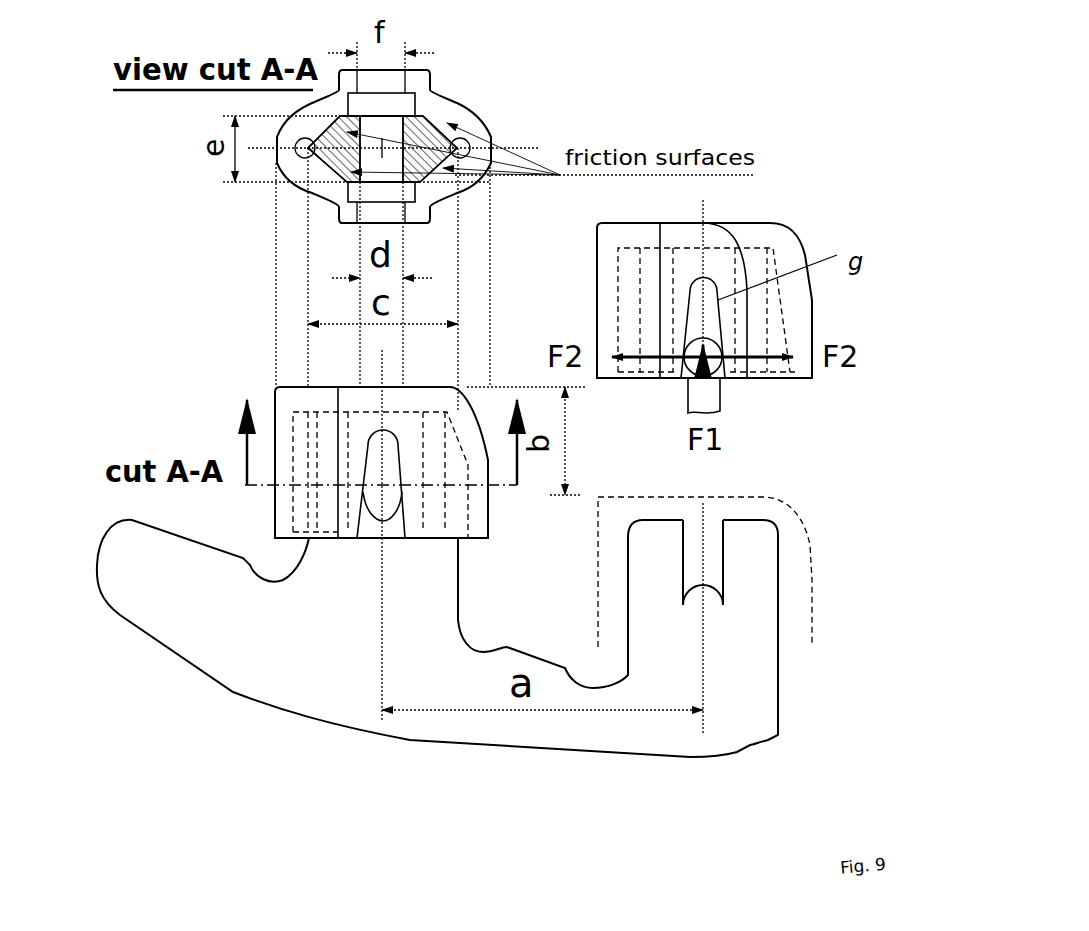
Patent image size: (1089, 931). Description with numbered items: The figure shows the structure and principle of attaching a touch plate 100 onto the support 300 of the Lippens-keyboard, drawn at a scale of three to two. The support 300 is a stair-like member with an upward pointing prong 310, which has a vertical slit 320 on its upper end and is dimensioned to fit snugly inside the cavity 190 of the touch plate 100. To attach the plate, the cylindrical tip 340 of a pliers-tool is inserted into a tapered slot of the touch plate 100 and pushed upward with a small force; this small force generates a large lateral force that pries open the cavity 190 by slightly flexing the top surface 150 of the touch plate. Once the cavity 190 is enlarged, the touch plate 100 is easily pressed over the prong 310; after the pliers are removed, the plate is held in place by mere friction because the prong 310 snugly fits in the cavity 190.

The touch plate 100 is at (788, 225).
The top surface 150 is at (747, 223).
The cavity 190 is at (793, 640).
The support 300 is at (238, 652).
The prong 310 is at (1012, 468).
The vertical slit 320 is at (717, 573).
The cylindrical tip of pliers-tool 340 is at (727, 342).